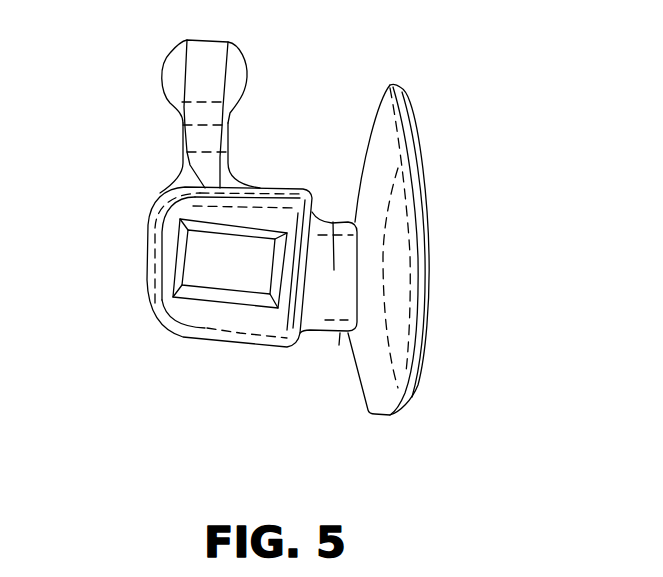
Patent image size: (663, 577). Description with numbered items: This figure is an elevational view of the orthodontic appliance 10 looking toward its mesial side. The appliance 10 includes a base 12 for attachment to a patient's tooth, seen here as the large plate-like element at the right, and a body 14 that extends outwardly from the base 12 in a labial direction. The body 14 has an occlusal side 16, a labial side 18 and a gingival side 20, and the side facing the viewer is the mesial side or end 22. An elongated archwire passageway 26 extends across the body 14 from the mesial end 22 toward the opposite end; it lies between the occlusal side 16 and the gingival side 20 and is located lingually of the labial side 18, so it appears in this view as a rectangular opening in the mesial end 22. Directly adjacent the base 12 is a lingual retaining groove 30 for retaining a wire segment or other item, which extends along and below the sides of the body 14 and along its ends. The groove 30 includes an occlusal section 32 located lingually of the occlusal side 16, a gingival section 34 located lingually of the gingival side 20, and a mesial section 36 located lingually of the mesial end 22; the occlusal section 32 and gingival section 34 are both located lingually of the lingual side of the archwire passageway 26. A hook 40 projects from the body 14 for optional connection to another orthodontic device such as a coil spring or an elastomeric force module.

The orthodontic appliance 10 is at (359, 68).
The base 12 is at (378, 387).
The body 14 is at (140, 320).
The occlusal side 16 is at (223, 344).
The labial side 18 is at (150, 247).
The gingival side 20 is at (273, 186).
The mesial side or end 22 is at (250, 325).
The archwire passageway 26 is at (213, 284).
The lingual retaining groove 30 is at (306, 352).
The occlusal section 32 is at (340, 333).
The gingival section 34 is at (320, 218).
The mesial section 36 is at (333, 222).
The hook 40 is at (177, 65).